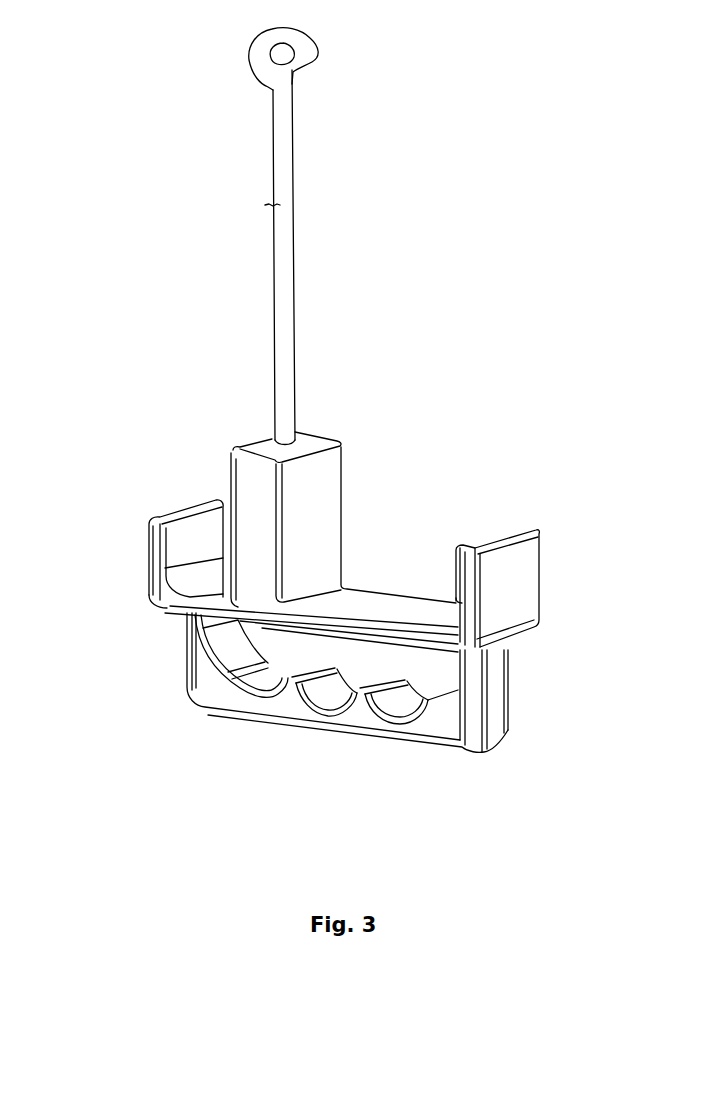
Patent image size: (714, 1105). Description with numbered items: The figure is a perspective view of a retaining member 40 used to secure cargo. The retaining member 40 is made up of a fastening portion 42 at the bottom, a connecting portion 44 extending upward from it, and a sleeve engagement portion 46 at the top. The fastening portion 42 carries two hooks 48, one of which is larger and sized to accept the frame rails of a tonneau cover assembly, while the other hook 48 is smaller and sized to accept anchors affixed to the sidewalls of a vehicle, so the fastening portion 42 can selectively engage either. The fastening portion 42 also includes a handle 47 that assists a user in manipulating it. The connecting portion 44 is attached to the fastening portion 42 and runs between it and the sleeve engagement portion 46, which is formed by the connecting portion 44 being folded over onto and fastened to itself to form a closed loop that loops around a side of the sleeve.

The retaining member 40 is at (136, 271).
The fastening portion 42 is at (560, 577).
The connecting portion 44 is at (285, 284).
The sleeve engagement portion 46 is at (295, 36).
The handle 47 is at (363, 720).
The hooks 48 is at (182, 544).